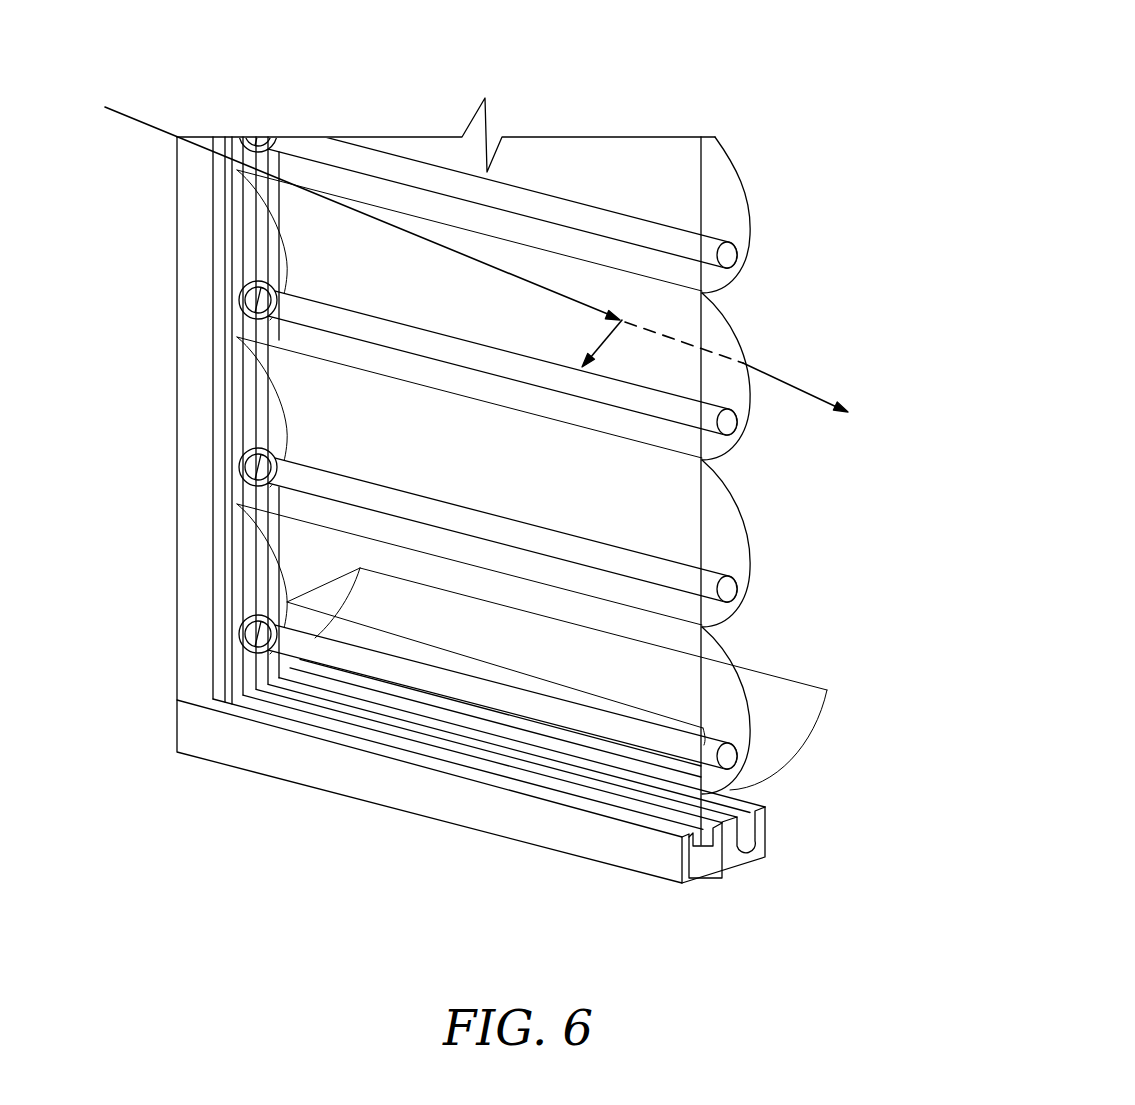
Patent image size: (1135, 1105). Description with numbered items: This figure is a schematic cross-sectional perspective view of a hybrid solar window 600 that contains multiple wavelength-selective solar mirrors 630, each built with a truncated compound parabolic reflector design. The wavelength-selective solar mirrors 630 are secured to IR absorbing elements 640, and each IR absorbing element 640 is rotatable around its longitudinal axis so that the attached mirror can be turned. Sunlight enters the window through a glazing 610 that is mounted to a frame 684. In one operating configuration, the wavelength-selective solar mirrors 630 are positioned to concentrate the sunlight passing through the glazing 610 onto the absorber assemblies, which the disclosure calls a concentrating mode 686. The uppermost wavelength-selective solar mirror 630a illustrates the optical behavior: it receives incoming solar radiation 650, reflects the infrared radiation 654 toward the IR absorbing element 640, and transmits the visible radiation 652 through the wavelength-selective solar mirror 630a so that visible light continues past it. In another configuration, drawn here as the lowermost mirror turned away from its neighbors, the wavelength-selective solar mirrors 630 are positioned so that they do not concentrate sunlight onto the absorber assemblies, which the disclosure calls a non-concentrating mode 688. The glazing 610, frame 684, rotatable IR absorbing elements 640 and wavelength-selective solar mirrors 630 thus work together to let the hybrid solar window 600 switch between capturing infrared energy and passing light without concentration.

The hybrid solar window 600 is at (696, 58).
The glazing 610 is at (701, 207).
The wavelength-selective solar mirrors 630 is at (745, 540).
The wavelength-selective solar mirror 630a is at (732, 330).
The IR absorbing element 640 is at (738, 598).
The solar radiation 650 is at (134, 122).
The visible radiation 652 is at (793, 388).
The infrared radiation 654 is at (604, 332).
The frame 684 is at (675, 850).
The concentrating mode 686 is at (240, 452).
The non-concentrating mode 688 is at (305, 600).